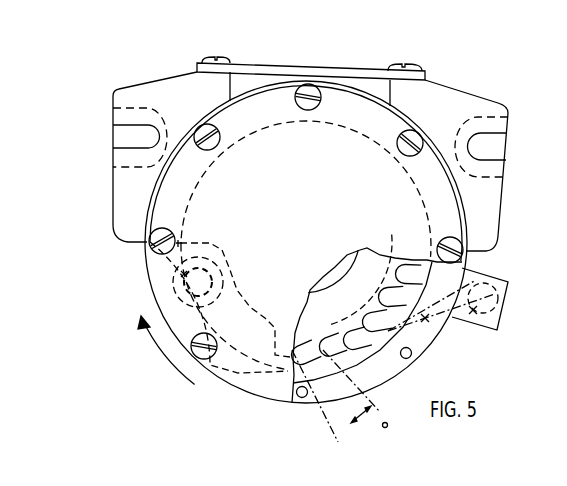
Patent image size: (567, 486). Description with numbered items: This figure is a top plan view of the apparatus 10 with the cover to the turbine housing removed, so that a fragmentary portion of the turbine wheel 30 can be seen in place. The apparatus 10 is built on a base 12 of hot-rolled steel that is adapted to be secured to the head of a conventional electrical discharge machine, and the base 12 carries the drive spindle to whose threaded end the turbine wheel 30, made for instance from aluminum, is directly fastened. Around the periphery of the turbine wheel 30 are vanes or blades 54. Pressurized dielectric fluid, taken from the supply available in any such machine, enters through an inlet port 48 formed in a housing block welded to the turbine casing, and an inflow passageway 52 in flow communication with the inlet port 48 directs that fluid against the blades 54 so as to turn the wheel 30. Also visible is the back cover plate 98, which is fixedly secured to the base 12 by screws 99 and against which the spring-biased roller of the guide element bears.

The apparatus 10 is at (97, 86).
The base 12 is at (161, 79).
The back cover plate 98 is at (280, 71).
The screws 99 is at (226, 51).
The turbine wheel 30 is at (373, 314).
The vanes or blades 54 is at (351, 359).
The inflow passageway 52 is at (428, 322).
The inlet port 48 is at (466, 322).